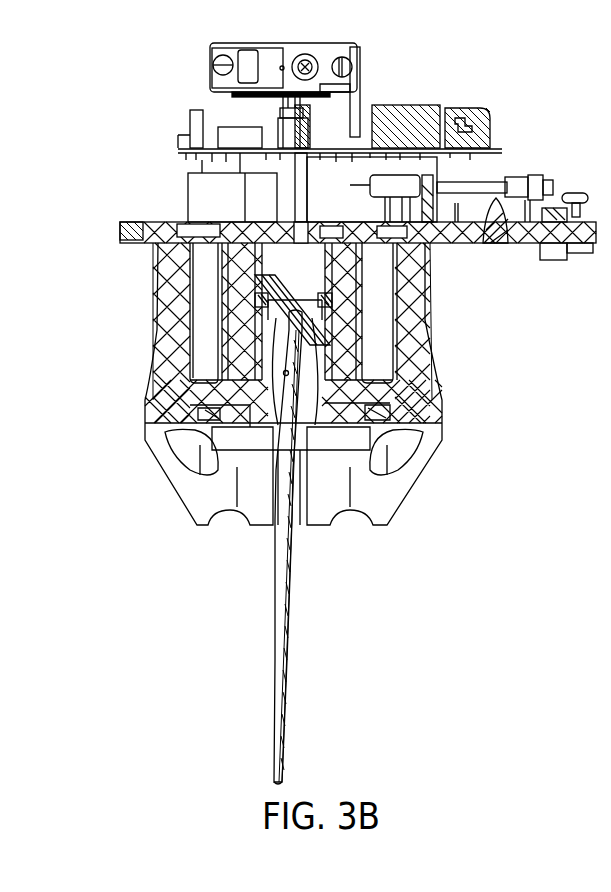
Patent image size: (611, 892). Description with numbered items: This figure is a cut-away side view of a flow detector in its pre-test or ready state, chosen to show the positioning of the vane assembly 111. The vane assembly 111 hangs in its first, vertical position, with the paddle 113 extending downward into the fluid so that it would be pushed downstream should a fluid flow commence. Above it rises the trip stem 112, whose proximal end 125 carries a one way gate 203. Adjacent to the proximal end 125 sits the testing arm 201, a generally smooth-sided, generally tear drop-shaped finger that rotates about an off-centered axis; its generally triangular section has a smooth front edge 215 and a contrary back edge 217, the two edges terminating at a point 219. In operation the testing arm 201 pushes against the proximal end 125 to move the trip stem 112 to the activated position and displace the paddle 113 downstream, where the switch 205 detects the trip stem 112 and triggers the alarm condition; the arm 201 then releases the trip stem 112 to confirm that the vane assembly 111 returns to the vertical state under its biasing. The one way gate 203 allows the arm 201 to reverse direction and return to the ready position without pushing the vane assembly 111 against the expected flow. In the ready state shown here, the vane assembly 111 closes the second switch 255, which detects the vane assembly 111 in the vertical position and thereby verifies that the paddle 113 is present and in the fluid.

The vane assembly 111 is at (275, 760).
The paddle 113 is at (288, 660).
The trip stem 112 is at (282, 138).
The proximal end 125 is at (307, 100).
The testing arm 201 is at (305, 55).
The one way gate 203 is at (298, 92).
The switch 205 is at (225, 127).
The smooth front edge 215 is at (340, 90).
The contrary back edge 217 is at (339, 56).
The point 219 is at (352, 78).
The switch 255 is at (355, 130).